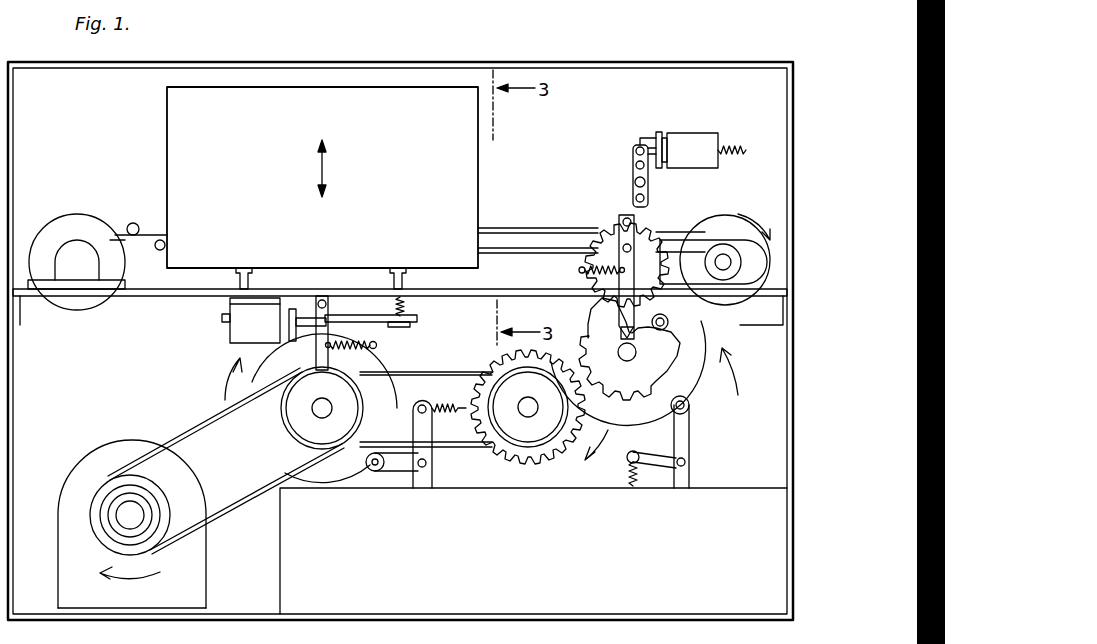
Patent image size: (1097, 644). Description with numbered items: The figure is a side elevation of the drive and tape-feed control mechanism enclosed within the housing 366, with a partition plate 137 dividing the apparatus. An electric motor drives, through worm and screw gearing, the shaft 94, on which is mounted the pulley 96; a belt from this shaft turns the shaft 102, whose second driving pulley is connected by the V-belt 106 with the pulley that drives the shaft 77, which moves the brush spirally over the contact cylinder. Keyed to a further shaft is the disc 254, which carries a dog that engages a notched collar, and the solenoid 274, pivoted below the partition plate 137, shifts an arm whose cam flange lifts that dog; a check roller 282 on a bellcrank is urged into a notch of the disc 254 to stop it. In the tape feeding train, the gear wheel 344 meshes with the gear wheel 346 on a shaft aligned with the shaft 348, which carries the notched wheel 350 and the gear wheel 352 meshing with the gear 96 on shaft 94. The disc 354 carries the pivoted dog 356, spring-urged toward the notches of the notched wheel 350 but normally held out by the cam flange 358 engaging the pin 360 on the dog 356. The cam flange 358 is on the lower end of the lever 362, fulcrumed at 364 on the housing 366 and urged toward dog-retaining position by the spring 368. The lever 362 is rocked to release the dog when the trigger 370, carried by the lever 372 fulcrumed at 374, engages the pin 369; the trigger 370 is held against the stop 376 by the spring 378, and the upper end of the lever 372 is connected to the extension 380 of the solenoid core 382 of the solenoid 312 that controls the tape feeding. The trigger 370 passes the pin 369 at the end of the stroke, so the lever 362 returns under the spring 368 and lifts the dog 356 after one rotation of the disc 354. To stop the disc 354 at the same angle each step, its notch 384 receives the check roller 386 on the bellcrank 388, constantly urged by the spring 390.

The housing 366 is at (13, 135).
The partition plate 137 is at (182, 298).
The solenoid 274 is at (242, 318).
The disc 254 is at (378, 357).
The shaft 77 is at (128, 510).
The V-belt 106 is at (203, 432).
The shaft 102 is at (312, 409).
The check roller 282 is at (375, 470).
The shaft 94 is at (525, 415).
The driving pulley 96 is at (533, 468).
The gear wheel 344 is at (602, 242).
The pin 369 is at (606, 248).
The gear wheel 346 is at (598, 284).
The lever 362 is at (616, 262).
The spring 368 is at (580, 275).
The pin 360 is at (646, 276).
The trigger 370 is at (632, 187).
The lever 372 is at (632, 172).
The fulcrum 374 is at (633, 161).
The stop 376 is at (648, 197).
The spring 378 is at (632, 206).
The extension 380 is at (652, 142).
The solenoid core 382 is at (664, 132).
The solenoid 312 is at (692, 142).
The fulcrum 364 is at (712, 203).
The cam flange 358 is at (620, 320).
The dog 356 is at (670, 319).
The notched wheel 350 is at (690, 345).
The disc 354 is at (690, 360).
The shaft 348 is at (645, 356).
The gear wheel 352 is at (632, 410).
The check roller 386 is at (690, 405).
The bellcrank 388 is at (690, 432).
The notch 384 is at (648, 446).
The spring 390 is at (630, 478).